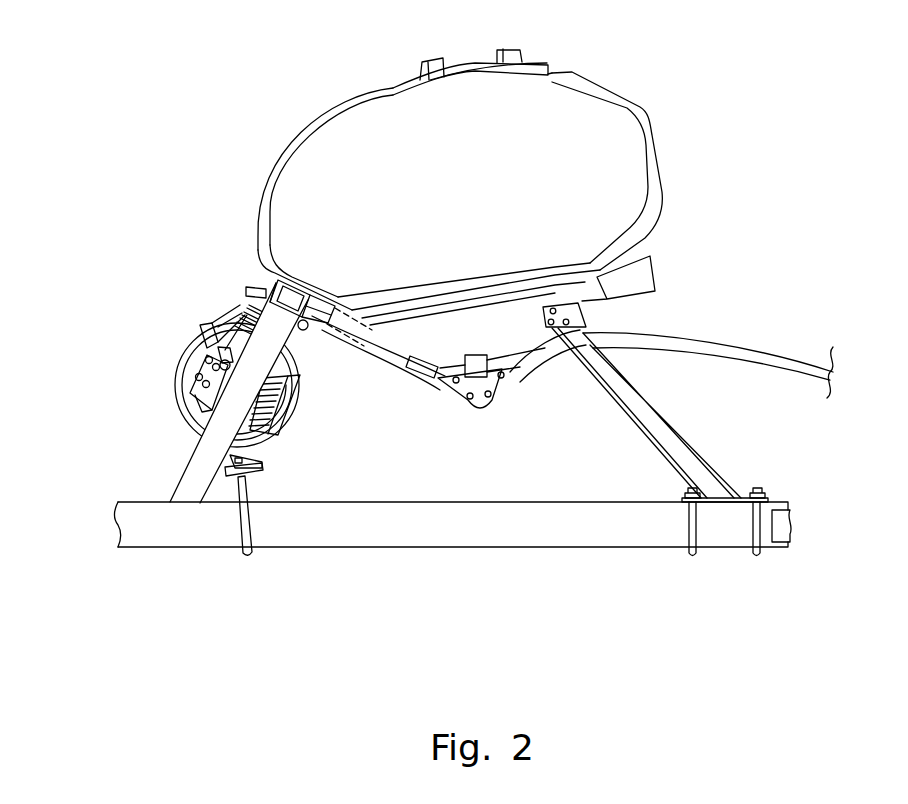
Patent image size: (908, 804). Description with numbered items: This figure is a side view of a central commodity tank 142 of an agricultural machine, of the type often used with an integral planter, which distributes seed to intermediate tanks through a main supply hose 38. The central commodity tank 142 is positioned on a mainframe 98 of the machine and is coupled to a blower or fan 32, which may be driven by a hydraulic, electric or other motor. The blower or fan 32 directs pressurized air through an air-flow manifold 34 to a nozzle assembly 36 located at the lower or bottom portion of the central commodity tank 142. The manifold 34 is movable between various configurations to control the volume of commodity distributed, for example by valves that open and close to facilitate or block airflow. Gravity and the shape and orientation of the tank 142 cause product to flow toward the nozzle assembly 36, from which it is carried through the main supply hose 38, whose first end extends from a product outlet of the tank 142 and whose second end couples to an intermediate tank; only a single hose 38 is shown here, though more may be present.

The central commodity tank 142 is at (500, 184).
The air-flow manifold 34 is at (257, 285).
The blower or fan 32 is at (193, 400).
The nozzle assembly 36 is at (483, 417).
The main supply hose 38 is at (802, 374).
The mainframe 98 is at (368, 548).